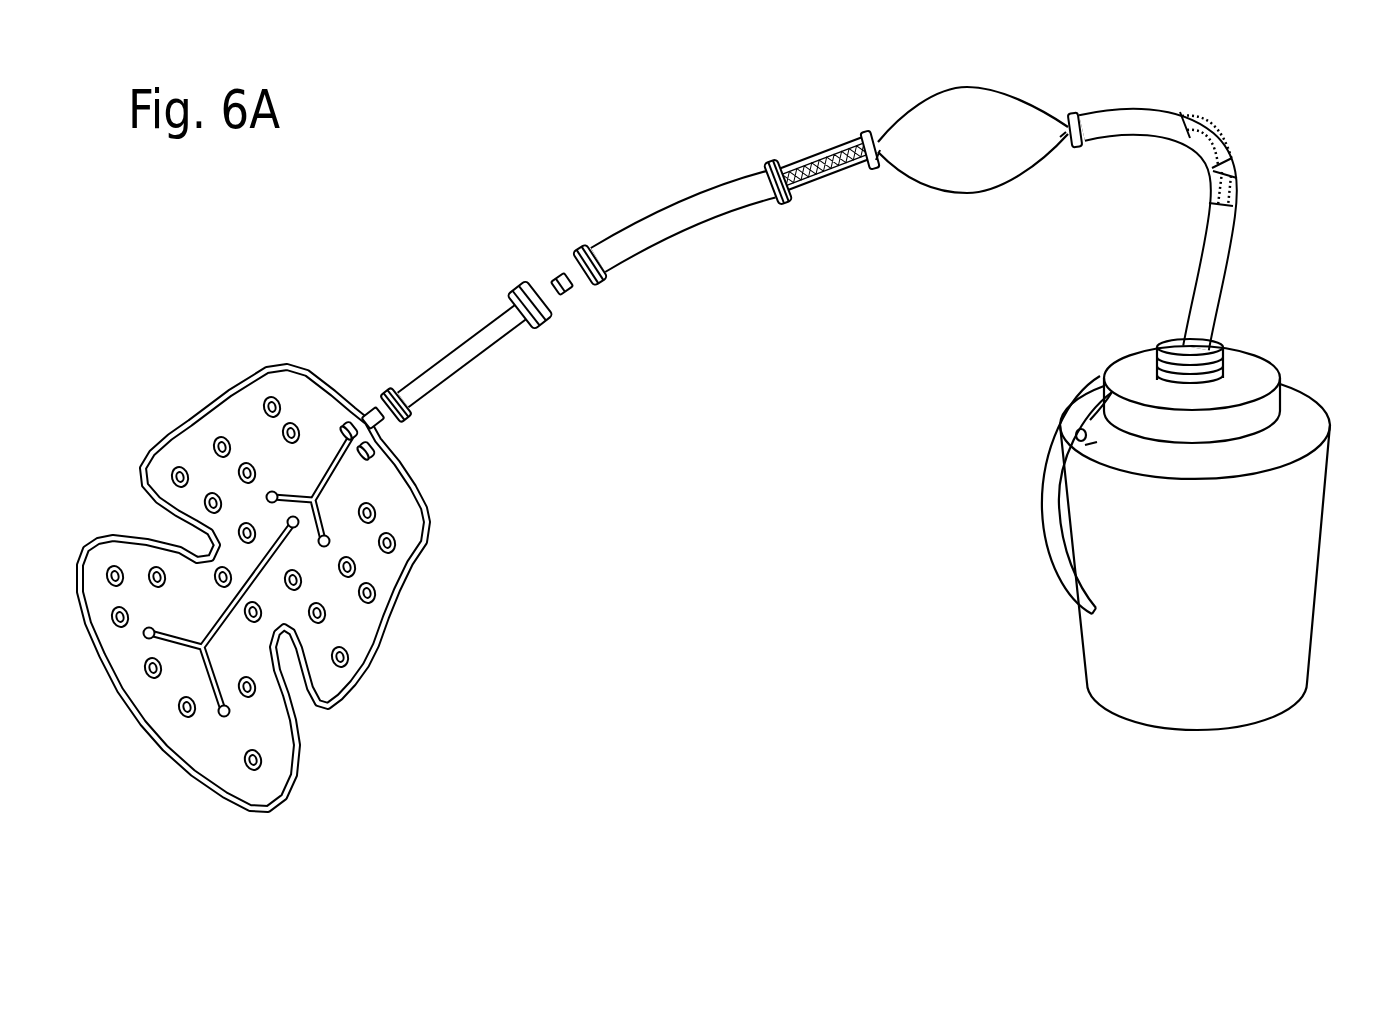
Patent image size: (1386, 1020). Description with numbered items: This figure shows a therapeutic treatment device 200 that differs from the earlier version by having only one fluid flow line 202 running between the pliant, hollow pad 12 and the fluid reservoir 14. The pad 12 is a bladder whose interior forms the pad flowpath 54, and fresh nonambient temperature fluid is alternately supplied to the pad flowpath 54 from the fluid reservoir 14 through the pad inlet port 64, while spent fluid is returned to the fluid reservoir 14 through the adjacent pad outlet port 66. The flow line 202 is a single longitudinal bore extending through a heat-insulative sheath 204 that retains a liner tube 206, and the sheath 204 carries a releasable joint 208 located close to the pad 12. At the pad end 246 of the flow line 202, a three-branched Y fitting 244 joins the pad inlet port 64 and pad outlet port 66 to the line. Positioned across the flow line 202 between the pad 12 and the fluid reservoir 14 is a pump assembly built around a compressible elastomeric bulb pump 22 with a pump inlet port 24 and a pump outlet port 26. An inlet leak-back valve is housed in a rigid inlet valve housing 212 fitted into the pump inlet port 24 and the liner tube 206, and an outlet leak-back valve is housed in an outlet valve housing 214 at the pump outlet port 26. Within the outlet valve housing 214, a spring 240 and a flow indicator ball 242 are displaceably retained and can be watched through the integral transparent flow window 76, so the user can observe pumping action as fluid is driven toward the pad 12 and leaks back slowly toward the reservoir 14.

The pad 12 is at (388, 640).
The fluid reservoir 14 is at (1314, 537).
The bulb pump 22 is at (980, 88).
The pump inlet port 24 is at (1061, 142).
The pump outlet port 26 is at (872, 168).
The pad flowpath 54 is at (213, 750).
The pad inlet port 64 is at (380, 441).
The pad outlet port 66 is at (366, 404).
The transparent flow window 76 is at (816, 186).
The therapeutic treatment device 200 is at (836, 428).
The fluid flow line 202 is at (1222, 143).
The heat-insulative sheath 204 is at (1216, 243).
The liner tube 206 is at (1235, 188).
The releasable joint 208 is at (580, 242).
The inlet valve housing 212 is at (1071, 113).
The outlet valve housing 214 is at (866, 134).
The spring 240 is at (801, 162).
The flow indicator ball 242 is at (848, 148).
The Y fitting 244 is at (399, 388).
The pad end 246 is at (433, 394).